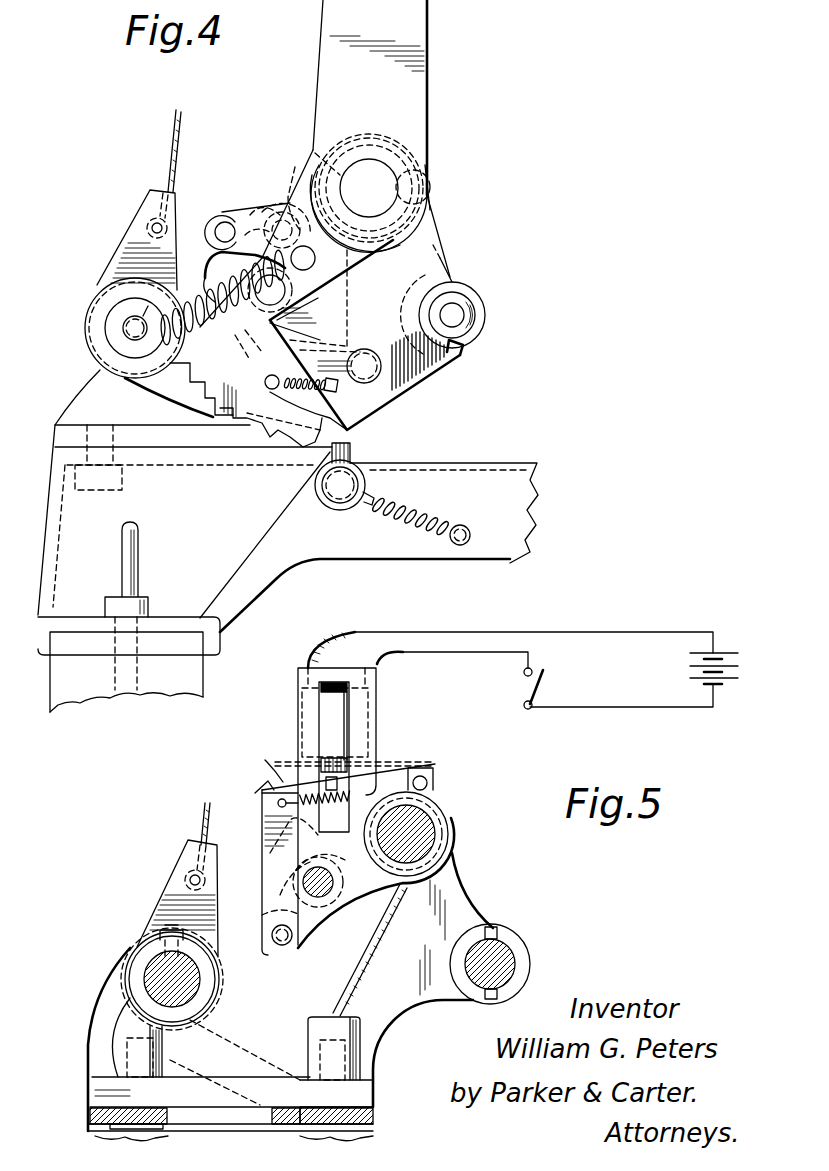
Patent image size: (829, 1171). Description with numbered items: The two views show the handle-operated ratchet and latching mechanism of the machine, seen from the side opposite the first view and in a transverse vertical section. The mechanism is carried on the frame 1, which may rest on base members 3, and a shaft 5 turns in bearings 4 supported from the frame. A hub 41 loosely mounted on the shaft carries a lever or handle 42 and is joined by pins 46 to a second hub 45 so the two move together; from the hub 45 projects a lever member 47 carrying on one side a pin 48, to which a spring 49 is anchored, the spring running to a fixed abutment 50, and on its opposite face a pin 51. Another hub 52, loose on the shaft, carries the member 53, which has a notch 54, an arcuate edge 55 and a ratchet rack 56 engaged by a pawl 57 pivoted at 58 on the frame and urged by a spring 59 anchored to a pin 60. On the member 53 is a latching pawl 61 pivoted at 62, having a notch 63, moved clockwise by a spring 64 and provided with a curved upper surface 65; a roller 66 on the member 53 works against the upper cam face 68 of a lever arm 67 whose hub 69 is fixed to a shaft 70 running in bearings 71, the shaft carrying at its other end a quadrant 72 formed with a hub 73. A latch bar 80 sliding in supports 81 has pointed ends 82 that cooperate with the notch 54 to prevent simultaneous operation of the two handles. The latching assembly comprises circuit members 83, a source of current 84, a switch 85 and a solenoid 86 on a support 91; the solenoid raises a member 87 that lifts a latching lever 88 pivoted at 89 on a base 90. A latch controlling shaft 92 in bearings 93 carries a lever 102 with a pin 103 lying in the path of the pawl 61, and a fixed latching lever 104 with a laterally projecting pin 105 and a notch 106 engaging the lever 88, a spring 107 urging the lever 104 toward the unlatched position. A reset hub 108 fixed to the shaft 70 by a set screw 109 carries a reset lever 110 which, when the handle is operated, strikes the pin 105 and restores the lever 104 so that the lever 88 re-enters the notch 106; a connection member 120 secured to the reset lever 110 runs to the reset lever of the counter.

In FIG. 4, the frame structure 1 is at (60, 430).
In FIG. 5, the frame structure 1 is at (462, 900).
In FIG. 4, the base members 3 is at (62, 685).
In FIG. 4, the bearings 4 is at (445, 163).
In FIG. 5, the bearings 4 is at (450, 843).
In FIG. 4, the shaft 5 is at (387, 177).
In FIG. 5, the shaft 5 is at (430, 830).
In FIG. 4, the hub 41 is at (407, 137).
In FIG. 4, the lever or handle 42 is at (413, 38).
In FIG. 4, the hub 45 is at (428, 197).
In FIG. 4, the pins 46 is at (315, 153).
In FIG. 4, the lever member 47 is at (357, 263).
In FIG. 4, the pin 48 is at (310, 268).
In FIG. 4, the spring 49 is at (205, 322).
In FIG. 4, the fixed abutment 50 is at (120, 330).
In FIG. 4, the pin 51 is at (285, 292).
In FIG. 4, the hub 52 is at (430, 176).
In FIG. 4, the notched member 53 is at (420, 256).
In FIG. 4, the notch 54 is at (450, 365).
In FIG. 4, the arcuate edge 55 is at (286, 440).
In FIG. 4, the ratchet rack 56 is at (222, 425).
In FIG. 4, the pawl 57 is at (352, 452).
In FIG. 4, the pivot 58 is at (344, 497).
In FIG. 4, the spring 59 is at (425, 508).
In FIG. 4, the pin 60 is at (465, 530).
In FIG. 4, the latching pawl 61 is at (308, 325).
In FIG. 4, the pivot 62 is at (366, 358).
In FIG. 4, the notch 63 is at (310, 310).
In FIG. 4, the spring 64 is at (340, 428).
In FIG. 4, the curved upper surface 65 is at (237, 247).
In FIG. 4, the roller 66 is at (207, 264).
In FIG. 4, the lever arm 67 is at (180, 392).
In FIG. 4, the upper cam face 68 is at (231, 312).
In FIG. 4, the hub 69 is at (98, 337).
In FIG. 4, the shaft 70 is at (115, 344).
In FIG. 5, the shaft 70 is at (148, 983).
In FIG. 4, the bearings 71 is at (90, 305).
In FIG. 5, the bearings 71 is at (125, 965).
In FIG. 5, the quadrant 72 is at (98, 1040).
In FIG. 5, the hub 73 is at (128, 950).
In FIG. 4, the latch bar 80 is at (470, 300).
In FIG. 5, the latch bar 80 is at (505, 960).
In FIG. 4, the supports 81 is at (468, 283).
In FIG. 5, the supports 81 is at (510, 936).
In FIG. 4, the pointed ends 82 is at (470, 316).
In FIG. 5, the circuit members 83 is at (335, 637).
In FIG. 5, the source of current 84 is at (725, 650).
In FIG. 5, the switch 85 is at (545, 680).
In FIG. 5, the solenoid 86 is at (330, 705).
In FIG. 5, the member 87 is at (345, 760).
In FIG. 5, the latching lever 88 is at (336, 765).
In FIG. 5, the pivot 89 is at (428, 782).
In FIG. 5, the abutment or base 90 is at (435, 808).
In FIG. 5, the support 91 is at (310, 672).
In FIG. 4, the latch controlling shaft 92 is at (280, 215).
In FIG. 5, the latch controlling shaft 92 is at (325, 895).
In FIG. 4, the bearings 93 is at (290, 189).
In FIG. 5, the bearings 93 is at (385, 915).
In FIG. 4, the lever 102 is at (262, 205).
In FIG. 4, the pin 103 is at (225, 228).
In FIG. 5, the latching lever 104 is at (263, 887).
In FIG. 5, the pin 105 is at (258, 918).
In FIG. 5, the notch 106 is at (270, 785).
In FIG. 5, the spring 107 is at (290, 815).
In FIG. 5, the hub 108 is at (208, 972).
In FIG. 5, the set screw 109 is at (163, 932).
In FIG. 4, the reset lever 110 is at (135, 231).
In FIG. 5, the reset lever 110 is at (175, 878).
In FIG. 4, the connection member 120 is at (170, 150).
In FIG. 5, the connection member 120 is at (203, 820).